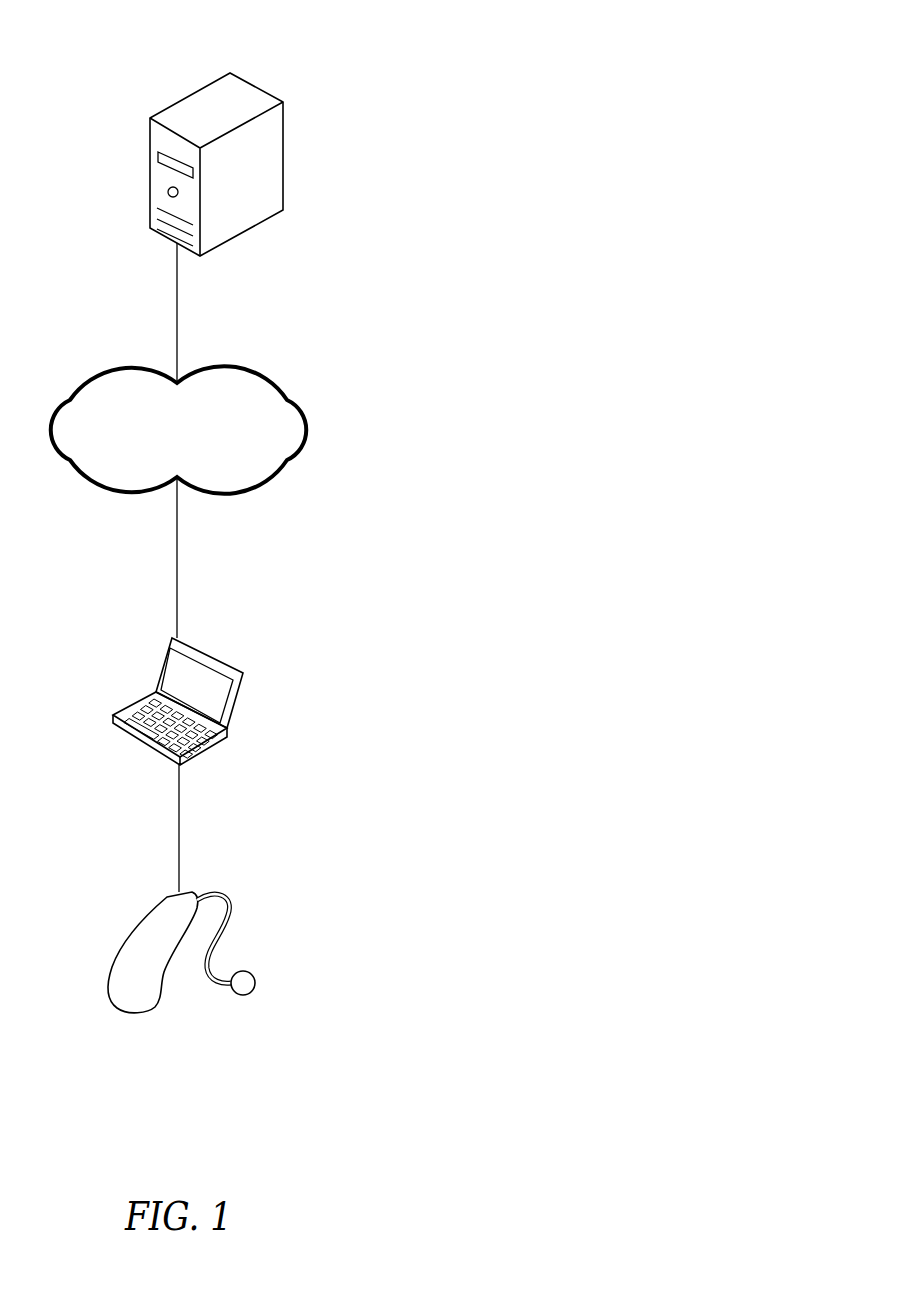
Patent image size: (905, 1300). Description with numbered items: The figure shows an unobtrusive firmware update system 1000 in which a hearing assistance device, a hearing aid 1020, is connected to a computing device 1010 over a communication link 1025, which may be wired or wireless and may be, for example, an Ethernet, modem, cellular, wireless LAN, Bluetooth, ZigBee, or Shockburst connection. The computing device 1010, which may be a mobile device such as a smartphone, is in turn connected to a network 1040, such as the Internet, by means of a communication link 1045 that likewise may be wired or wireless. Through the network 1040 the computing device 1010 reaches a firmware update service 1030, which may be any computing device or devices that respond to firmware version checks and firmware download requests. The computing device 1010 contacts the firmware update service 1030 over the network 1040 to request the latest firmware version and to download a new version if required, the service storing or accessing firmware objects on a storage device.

The unobtrusive firmware update system 1000 is at (485, 47).
The firmware update service 1030 is at (232, 72).
The network 1040 is at (335, 415).
The communication link 1045 is at (178, 553).
The computing device 1010 is at (243, 673).
The communication link 1025 is at (180, 810).
The hearing aid 1020 is at (227, 888).